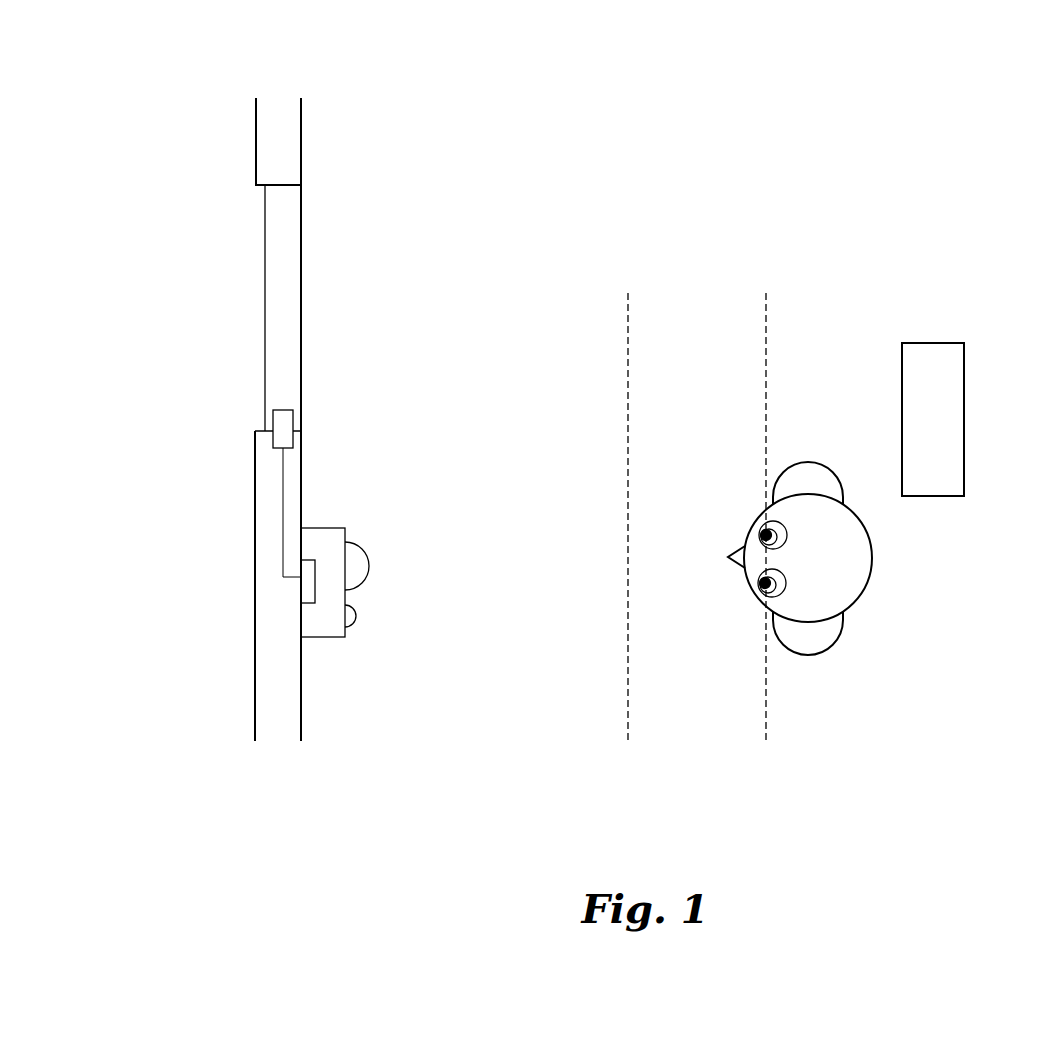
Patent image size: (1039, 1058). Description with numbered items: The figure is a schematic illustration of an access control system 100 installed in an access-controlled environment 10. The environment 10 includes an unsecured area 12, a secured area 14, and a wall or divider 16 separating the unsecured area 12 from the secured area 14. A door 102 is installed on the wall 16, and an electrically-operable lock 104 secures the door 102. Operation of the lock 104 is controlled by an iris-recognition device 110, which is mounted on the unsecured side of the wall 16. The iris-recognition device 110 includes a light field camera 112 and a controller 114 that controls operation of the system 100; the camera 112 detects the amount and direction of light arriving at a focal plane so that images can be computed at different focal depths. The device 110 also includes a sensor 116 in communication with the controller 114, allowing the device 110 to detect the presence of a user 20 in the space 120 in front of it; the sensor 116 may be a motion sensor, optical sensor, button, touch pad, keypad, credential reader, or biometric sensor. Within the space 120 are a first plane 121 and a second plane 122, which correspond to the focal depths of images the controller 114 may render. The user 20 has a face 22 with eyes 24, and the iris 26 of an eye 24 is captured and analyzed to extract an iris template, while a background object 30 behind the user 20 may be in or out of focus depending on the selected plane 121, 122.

The access-controlled region or environment 10 is at (144, 119).
The unsecured area 12 is at (365, 183).
The secured area 14 is at (194, 185).
The wall or divider 16 is at (255, 635).
The user 20 is at (883, 551).
The user's face 22 is at (744, 510).
The user's eyes 24 is at (773, 598).
The iris 26 is at (779, 583).
The background object 30 is at (965, 400).
The access control system 100 is at (175, 417).
The door 102 is at (265, 292).
The electrically-operable lock 104 is at (281, 410).
The iris-recognition device 110 is at (318, 527).
The light field camera 112 is at (348, 546).
The controller 114 is at (311, 605).
The sensor 116 is at (357, 613).
The space 120 is at (498, 715).
The first plane 121 is at (628, 535).
The second plane 122 is at (767, 535).